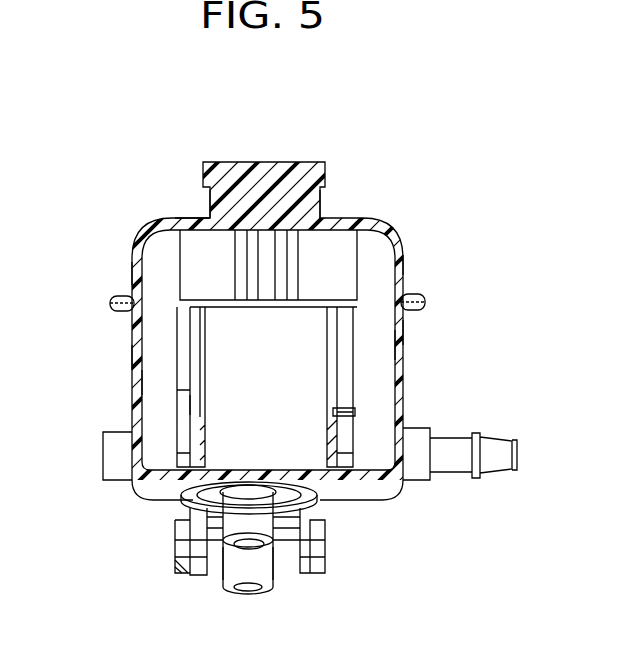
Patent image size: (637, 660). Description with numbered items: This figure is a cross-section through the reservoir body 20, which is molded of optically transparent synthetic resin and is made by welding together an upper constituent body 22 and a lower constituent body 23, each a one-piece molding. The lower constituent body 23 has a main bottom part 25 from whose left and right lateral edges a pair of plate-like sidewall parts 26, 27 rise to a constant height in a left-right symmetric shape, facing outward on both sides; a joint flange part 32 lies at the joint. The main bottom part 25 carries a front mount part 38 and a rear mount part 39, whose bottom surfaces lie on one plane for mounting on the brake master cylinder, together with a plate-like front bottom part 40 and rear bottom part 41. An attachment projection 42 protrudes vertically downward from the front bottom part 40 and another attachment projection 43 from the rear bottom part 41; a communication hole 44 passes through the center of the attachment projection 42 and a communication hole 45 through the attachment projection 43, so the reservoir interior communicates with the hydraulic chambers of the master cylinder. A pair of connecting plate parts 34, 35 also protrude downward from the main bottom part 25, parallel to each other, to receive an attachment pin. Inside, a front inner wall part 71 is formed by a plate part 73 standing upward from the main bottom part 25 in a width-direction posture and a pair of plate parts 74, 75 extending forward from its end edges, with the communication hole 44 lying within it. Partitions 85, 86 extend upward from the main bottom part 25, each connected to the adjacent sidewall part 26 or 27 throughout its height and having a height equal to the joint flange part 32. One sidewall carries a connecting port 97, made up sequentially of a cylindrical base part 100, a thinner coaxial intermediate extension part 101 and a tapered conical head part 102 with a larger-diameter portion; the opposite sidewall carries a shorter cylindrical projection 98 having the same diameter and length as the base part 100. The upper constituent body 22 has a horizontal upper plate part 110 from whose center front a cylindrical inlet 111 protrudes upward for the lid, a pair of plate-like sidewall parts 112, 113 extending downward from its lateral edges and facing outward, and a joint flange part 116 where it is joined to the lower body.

The reservoir body 20 is at (450, 186).
The upper constituent body 22 is at (416, 281).
The lower constituent body 23 is at (409, 330).
The main bottom part 25 is at (337, 493).
The sidewall part 26 is at (405, 340).
The sidewall part 27 is at (133, 357).
The joint flange part 32 is at (117, 313).
The connecting plate part 34 is at (302, 574).
The connecting plate part 35 is at (197, 574).
The front mount part 38 is at (183, 493).
The rear mount part 39 is at (210, 553).
The front bottom part 40 is at (207, 502).
The rear bottom part 41 is at (210, 540).
The attachment projection 42 is at (268, 520).
The attachment projection 43 is at (269, 565).
The communication hole 44 is at (247, 548).
The communication hole 45 is at (248, 590).
The front inner wall part 71 is at (193, 317).
The plate part 73 is at (240, 440).
The plate part 74 is at (336, 410).
The plate part 75 is at (193, 405).
The partition 85 is at (378, 375).
The partition 86 is at (152, 380).
The connecting port 97 is at (505, 486).
The projection 98 is at (115, 478).
The base part 100 is at (415, 437).
The intermediate extension part 101 is at (455, 472).
The head part 102 is at (500, 468).
The upper plate part 110 is at (192, 218).
The inlet 111 is at (300, 180).
The sidewall part 112 is at (407, 268).
The sidewall part 113 is at (133, 262).
The joint flange part 116 is at (422, 296).